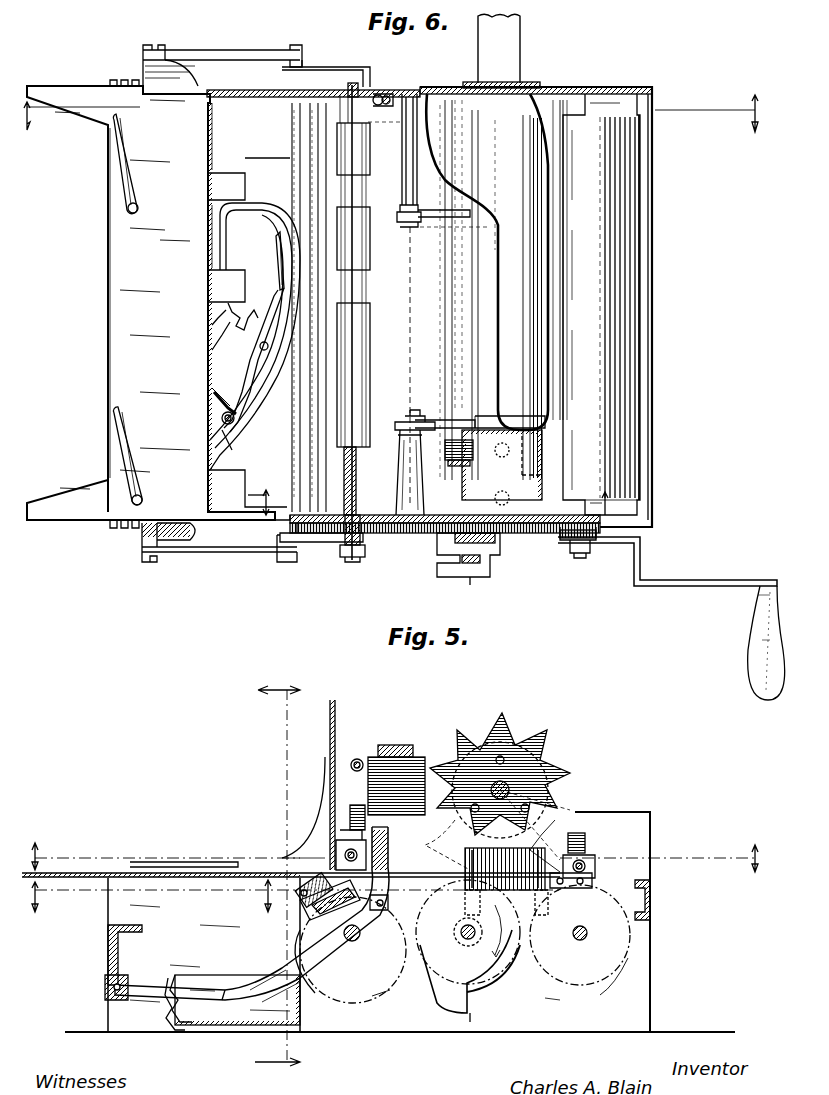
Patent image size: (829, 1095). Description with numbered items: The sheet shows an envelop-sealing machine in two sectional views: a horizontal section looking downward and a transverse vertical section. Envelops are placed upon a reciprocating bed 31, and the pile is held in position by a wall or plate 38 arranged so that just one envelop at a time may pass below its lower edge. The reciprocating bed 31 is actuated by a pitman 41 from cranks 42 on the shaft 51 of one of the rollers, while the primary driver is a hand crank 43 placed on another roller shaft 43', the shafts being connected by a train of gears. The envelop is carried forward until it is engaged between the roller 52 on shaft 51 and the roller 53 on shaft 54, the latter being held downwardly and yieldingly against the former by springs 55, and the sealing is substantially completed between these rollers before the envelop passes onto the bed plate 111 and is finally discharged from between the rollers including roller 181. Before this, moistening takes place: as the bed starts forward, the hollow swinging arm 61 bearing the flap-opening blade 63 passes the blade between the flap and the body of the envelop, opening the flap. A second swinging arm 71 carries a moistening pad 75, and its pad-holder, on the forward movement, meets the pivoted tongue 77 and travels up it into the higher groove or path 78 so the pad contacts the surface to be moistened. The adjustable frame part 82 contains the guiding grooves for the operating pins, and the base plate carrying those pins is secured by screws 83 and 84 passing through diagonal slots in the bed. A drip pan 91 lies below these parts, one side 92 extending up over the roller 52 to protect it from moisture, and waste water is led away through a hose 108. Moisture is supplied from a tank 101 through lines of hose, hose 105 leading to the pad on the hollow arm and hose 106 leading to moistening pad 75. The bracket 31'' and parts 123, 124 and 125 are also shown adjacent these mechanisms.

In FIG. 6, the reciprocating bed 31 is at (339, 271).
In FIG. 5, the reciprocating bed 31 is at (378, 926).
In FIG. 6, the housing partition bracket 31'' is at (247, 307).
In FIG. 6, the wall or plate 38 is at (336, 412).
In FIG. 5, the wall or plate 38 is at (338, 736).
In FIG. 6, the pitman 41 is at (226, 50).
In FIG. 6, the cranks 42 is at (322, 67).
In FIG. 6, the hand crank 43 is at (671, 618).
In FIG. 6, the roller shaft 43' is at (516, 571).
In FIG. 5, the roller shaft 43' is at (523, 951).
In FIG. 5, the shaft 51 is at (354, 942).
In FIG. 5, the roller 52 is at (350, 954).
In FIG. 6, the roller 53 is at (343, 432).
In FIG. 6, the shaft 54 is at (356, 84).
In FIG. 5, the springs 55 is at (351, 837).
In FIG. 6, the hollow swinging arm 61 is at (224, 334).
In FIG. 6, the flap-opening blade 63 is at (248, 316).
In FIG. 6, the second swinging arm 71 is at (224, 409).
In FIG. 6, the moistening pad 75 is at (278, 245).
In FIG. 6, the pivoted tongue 77 is at (262, 346).
In FIG. 6, the groove or path 78 is at (246, 327).
In FIG. 6, the frame part 82 is at (212, 257).
In FIG. 6, the screw 83 is at (145, 498).
In FIG. 6, the screw 84 is at (143, 207).
In FIG. 6, the drip pan 91 is at (245, 185).
In FIG. 5, the drip pan 91 is at (246, 1026).
In FIG. 6, the side of drip pan 92 is at (261, 159).
In FIG. 5, the tank 101 is at (368, 798).
In FIG. 5, the hose 105 is at (226, 966).
In FIG. 5, the hose 106 is at (380, 895).
In FIG. 5, the hose 108 is at (170, 1028).
In FIG. 6, the bed plate 111 is at (670, 472).
In FIG. 6, the bracket 123 is at (456, 428).
In FIG. 6, the post 124 is at (404, 478).
In FIG. 6, the collar 125 is at (422, 420).
In FIG. 6, the roller 181 is at (620, 368).
In FIG. 5, the roller 181 is at (596, 995).